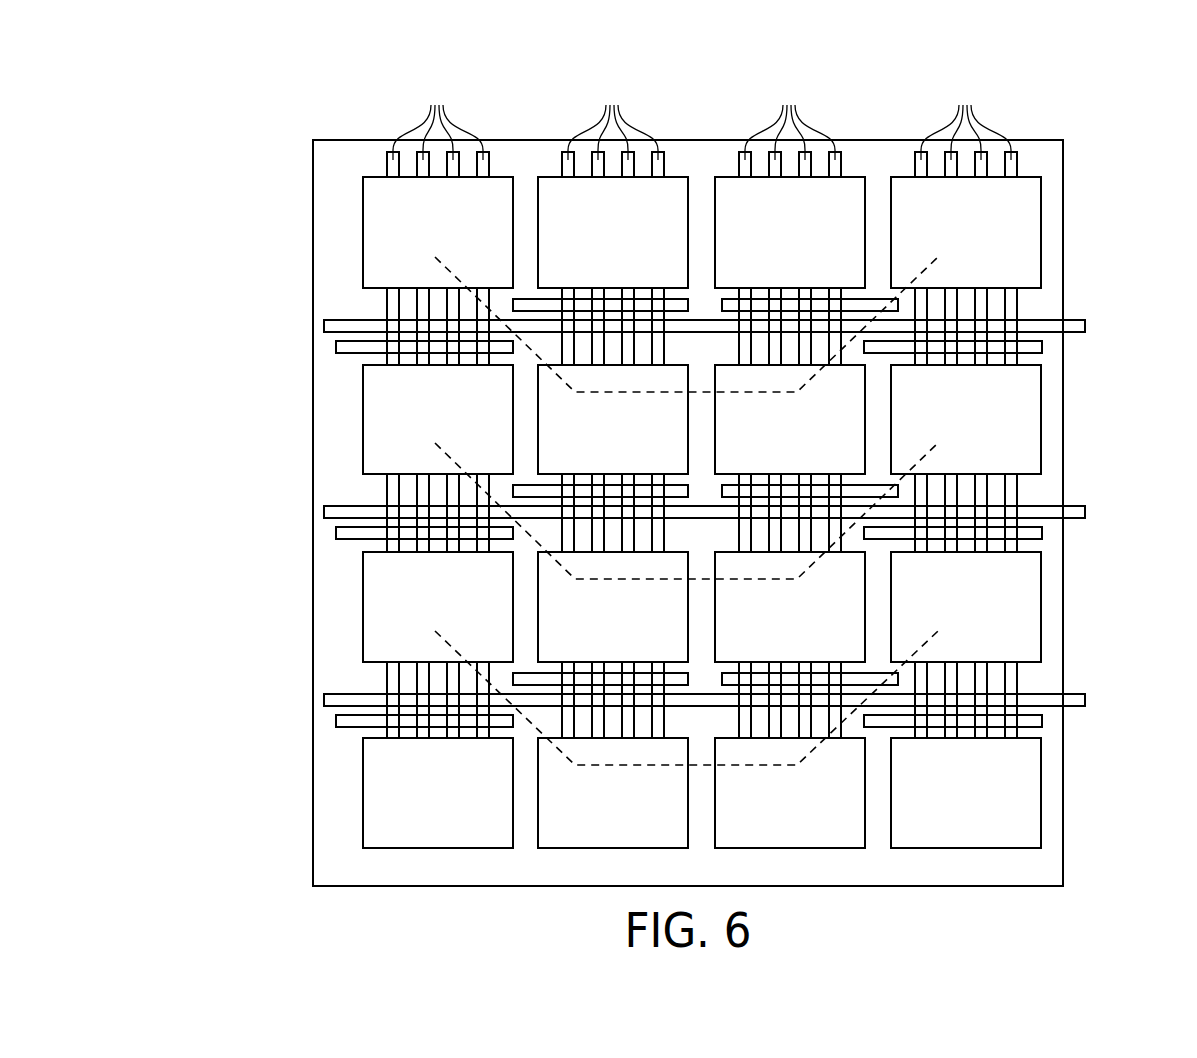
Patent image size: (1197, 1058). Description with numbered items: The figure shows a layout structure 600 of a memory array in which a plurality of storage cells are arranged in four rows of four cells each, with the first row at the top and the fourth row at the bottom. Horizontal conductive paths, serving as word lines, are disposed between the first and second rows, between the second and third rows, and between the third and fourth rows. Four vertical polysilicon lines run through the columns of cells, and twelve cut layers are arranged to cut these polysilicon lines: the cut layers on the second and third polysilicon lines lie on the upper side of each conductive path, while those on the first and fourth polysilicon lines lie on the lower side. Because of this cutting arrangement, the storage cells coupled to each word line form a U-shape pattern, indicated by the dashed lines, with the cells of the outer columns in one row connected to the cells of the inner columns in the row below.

The layout structure 600 is at (210, 67).